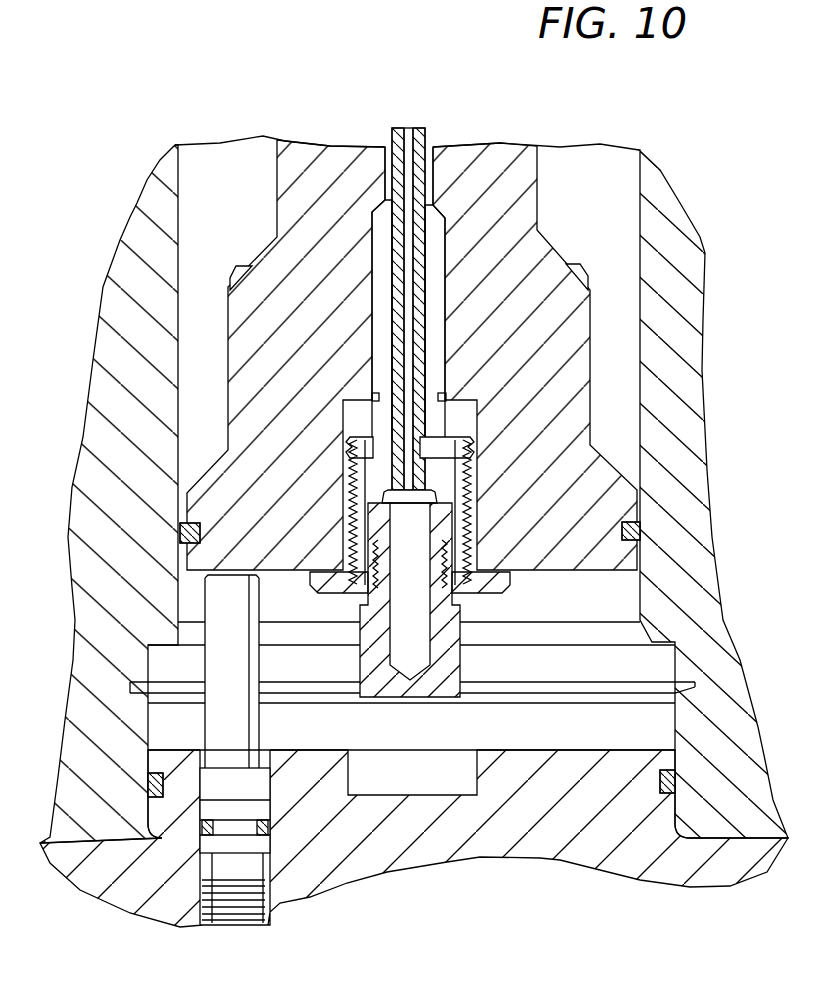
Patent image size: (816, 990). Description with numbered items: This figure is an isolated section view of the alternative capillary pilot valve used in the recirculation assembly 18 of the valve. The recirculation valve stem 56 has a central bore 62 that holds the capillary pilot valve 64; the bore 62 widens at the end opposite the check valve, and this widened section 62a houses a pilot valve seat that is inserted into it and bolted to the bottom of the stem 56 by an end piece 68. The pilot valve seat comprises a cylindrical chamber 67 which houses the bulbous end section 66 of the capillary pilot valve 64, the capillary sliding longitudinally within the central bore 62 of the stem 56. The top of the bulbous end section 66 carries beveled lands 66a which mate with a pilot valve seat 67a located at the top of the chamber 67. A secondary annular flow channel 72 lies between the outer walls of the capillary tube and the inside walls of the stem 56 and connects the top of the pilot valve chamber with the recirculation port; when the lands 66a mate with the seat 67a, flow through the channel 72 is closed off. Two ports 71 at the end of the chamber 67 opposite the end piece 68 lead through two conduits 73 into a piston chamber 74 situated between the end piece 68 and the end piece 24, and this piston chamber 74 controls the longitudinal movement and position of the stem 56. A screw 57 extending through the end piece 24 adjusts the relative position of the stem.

The recirculation assembly 18 is at (693, 333).
The end piece 24 is at (500, 857).
The stem 56 is at (535, 258).
The screw 57 is at (237, 903).
The central bore 62 is at (434, 148).
The widened section 62a is at (480, 485).
The capillary pilot valve 64 is at (446, 217).
The bulbous end section 66 is at (418, 470).
The beveled lands 66a is at (470, 450).
The cylindrical chamber 67 is at (395, 474).
The pilot valve seat 67a is at (447, 400).
The end piece 68 is at (478, 588).
The ports 71 is at (362, 441).
The annular flow channel 72 is at (377, 148).
The conduits 73 is at (458, 550).
The piston chamber 74 is at (572, 609).